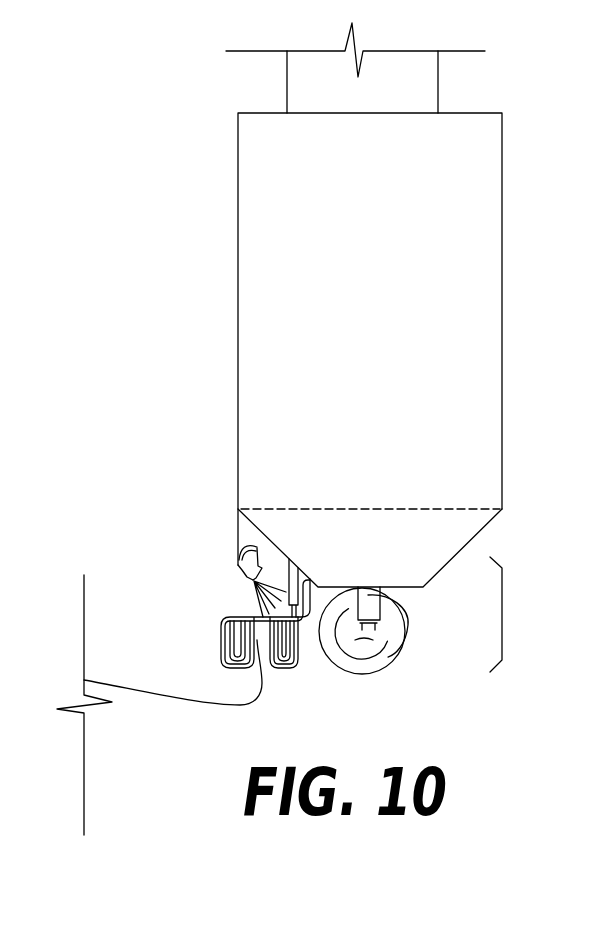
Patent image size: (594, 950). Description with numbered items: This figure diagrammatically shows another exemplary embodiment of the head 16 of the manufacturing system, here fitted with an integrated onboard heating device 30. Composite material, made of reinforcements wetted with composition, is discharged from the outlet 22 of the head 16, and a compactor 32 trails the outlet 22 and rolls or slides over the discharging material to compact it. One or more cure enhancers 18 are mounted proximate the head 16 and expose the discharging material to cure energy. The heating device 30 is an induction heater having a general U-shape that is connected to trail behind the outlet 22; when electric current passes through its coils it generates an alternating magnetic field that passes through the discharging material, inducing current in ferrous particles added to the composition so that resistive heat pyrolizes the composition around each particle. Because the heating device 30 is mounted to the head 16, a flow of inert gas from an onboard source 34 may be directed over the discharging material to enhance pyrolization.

The head 16 is at (371, 355).
The cure enhancer 18 is at (370, 594).
The outlet 22 is at (443, 615).
The heating device 30 is at (220, 627).
The compactor 32 is at (382, 637).
The onboard source 34 is at (237, 525).